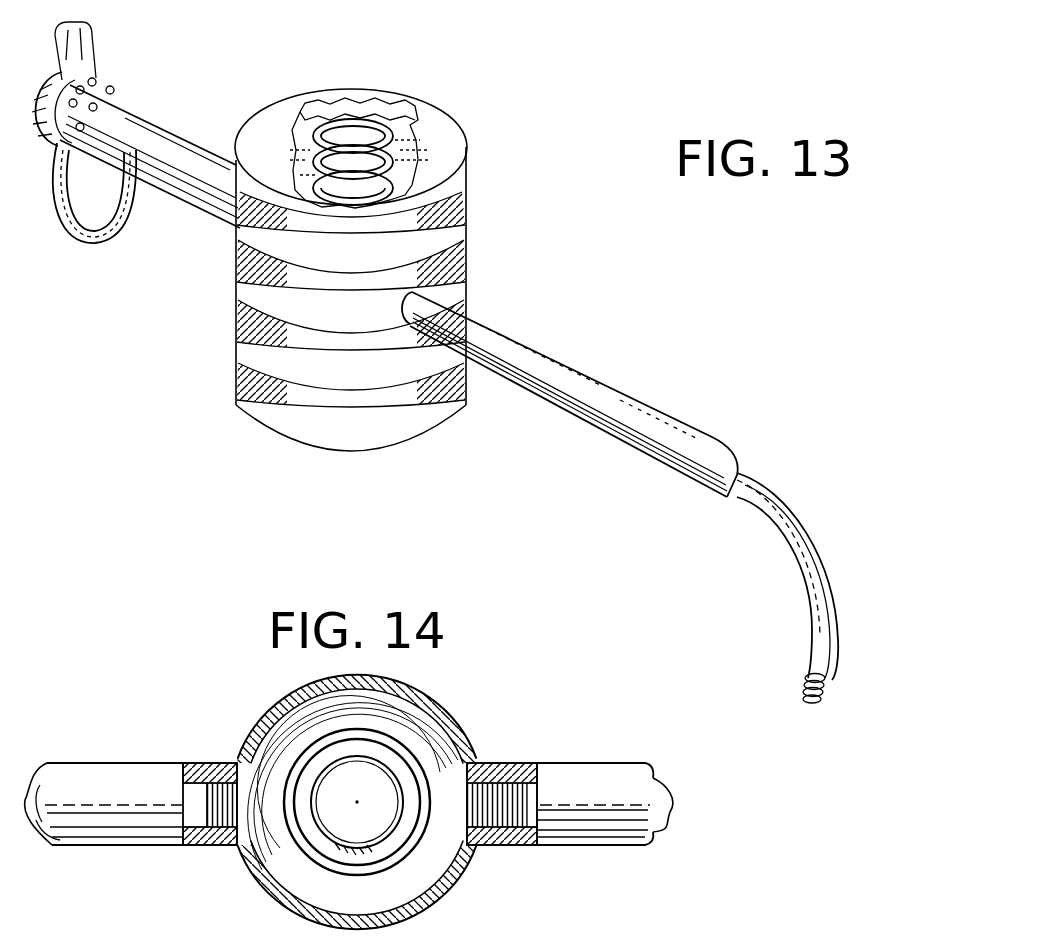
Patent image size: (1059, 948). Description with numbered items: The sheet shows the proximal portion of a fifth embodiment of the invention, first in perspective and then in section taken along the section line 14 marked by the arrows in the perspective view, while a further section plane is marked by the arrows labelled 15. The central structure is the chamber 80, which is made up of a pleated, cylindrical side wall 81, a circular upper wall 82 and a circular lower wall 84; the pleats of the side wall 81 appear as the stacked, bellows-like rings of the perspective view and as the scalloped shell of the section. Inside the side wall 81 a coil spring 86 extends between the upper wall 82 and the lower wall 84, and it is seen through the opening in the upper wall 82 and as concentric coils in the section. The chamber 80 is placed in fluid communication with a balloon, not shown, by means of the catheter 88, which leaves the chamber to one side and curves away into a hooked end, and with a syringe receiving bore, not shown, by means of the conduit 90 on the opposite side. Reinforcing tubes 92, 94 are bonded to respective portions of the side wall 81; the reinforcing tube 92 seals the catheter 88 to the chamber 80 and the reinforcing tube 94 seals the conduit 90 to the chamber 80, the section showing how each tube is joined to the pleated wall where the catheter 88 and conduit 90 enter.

In FIG. 13, the chamber 80 is at (425, 85).
In FIG. 13, the pleated, cylindrical side wall 81 is at (275, 357).
In FIG. 14, the pleated, cylindrical side wall 81 is at (262, 872).
In FIG. 13, the circular upper wall 82 is at (298, 97).
In FIG. 13, the circular lower wall 84 is at (317, 452).
In FIG. 13, the coil spring 86 is at (365, 120).
In FIG. 14, the coil spring 86 is at (312, 765).
In FIG. 13, the catheter 88 is at (822, 583).
In FIG. 14, the catheter 88 is at (507, 770).
In FIG. 14, the conduit 90 is at (190, 800).
In FIG. 13, the reinforcing tube 92 is at (577, 378).
In FIG. 14, the reinforcing tube 92 is at (578, 778).
In FIG. 13, the reinforcing tube 94 is at (177, 180).
In FIG. 14, the reinforcing tube 94 is at (82, 773).
In FIG. 13, the section line 14— 14 is at (510, 232).
In FIG. 13, the section line 15— 15 is at (248, 82).